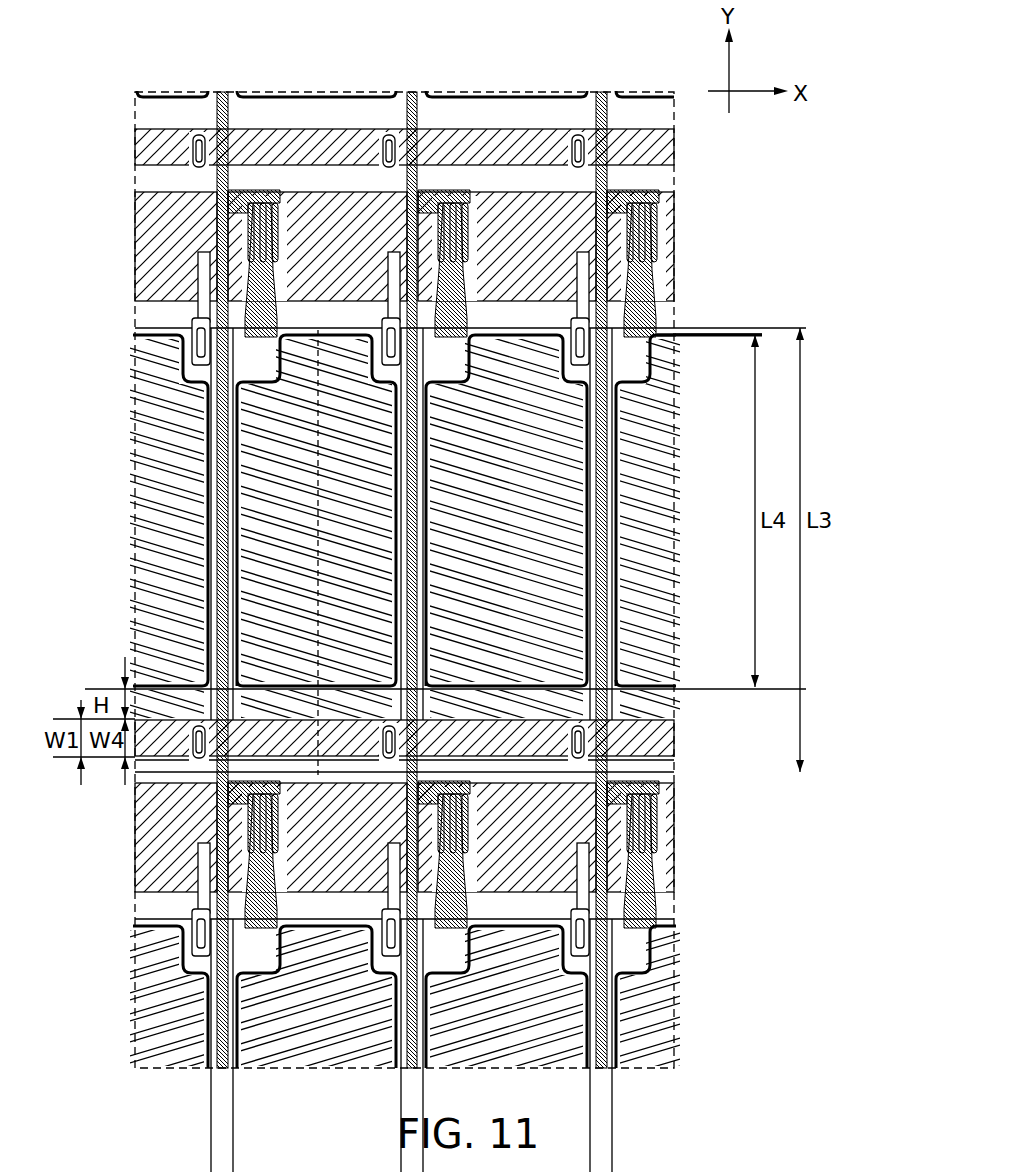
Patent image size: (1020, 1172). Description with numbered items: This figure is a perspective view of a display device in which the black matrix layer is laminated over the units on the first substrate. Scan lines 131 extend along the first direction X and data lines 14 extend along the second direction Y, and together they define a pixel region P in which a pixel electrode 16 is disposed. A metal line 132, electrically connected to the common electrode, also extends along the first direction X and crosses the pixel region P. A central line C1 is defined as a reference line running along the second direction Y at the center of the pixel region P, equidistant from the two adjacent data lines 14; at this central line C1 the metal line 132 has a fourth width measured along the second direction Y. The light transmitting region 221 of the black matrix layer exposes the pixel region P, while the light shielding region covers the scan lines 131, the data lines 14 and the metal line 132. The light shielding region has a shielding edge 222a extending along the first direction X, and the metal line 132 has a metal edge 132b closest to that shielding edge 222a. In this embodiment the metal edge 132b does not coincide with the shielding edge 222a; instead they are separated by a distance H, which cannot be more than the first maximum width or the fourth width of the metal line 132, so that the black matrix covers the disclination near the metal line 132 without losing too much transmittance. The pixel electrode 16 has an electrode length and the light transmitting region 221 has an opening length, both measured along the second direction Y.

The data line 14 is at (412, 91).
The metal line 132 is at (678, 150).
The metal edge 132b is at (678, 740).
The scan line 131 is at (678, 240).
The pixel electrode 16 is at (668, 358).
The light transmitting region 221 is at (660, 686).
The shielding edge 222a is at (662, 706).
The pixel region P is at (280, 545).
The central line C1 is at (333, 541).